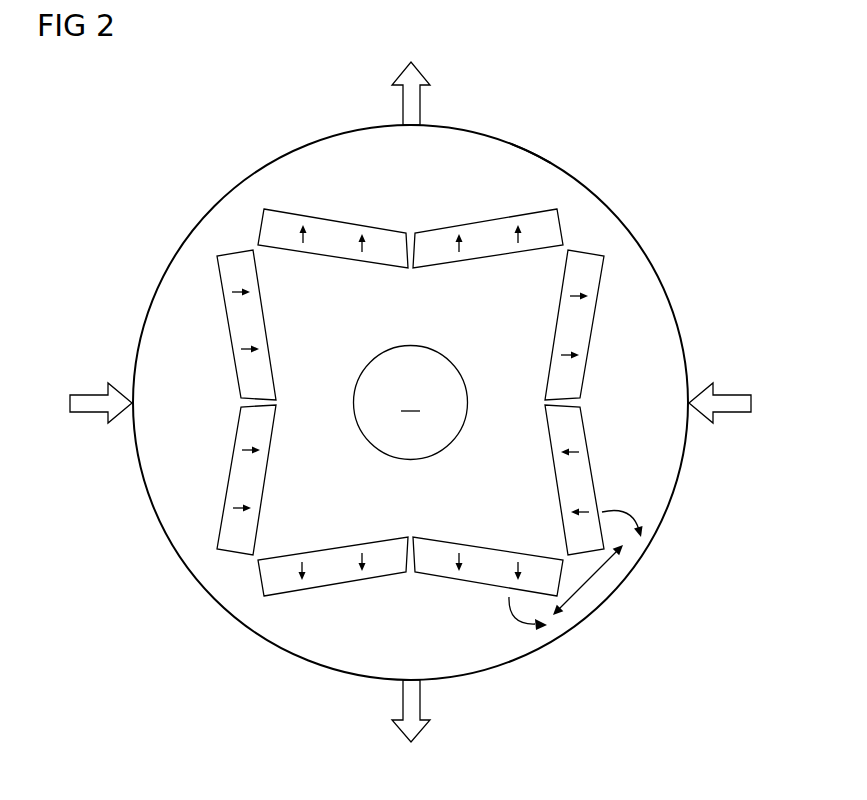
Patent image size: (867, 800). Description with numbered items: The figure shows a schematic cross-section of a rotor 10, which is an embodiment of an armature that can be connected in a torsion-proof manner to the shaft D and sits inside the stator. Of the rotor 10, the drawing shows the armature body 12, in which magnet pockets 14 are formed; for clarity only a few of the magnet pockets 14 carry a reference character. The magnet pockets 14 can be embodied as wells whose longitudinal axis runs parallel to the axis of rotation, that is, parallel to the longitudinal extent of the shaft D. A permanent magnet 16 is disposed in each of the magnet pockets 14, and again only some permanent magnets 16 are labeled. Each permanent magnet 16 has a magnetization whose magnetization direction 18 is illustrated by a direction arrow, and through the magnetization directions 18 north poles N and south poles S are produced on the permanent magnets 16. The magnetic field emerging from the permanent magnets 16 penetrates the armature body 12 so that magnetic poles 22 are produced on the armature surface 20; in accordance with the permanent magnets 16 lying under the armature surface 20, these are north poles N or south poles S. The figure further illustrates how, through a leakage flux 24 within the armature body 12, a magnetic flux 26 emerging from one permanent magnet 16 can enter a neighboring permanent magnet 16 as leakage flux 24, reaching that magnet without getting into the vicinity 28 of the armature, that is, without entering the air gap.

The rotor 10 is at (604, 200).
The armature body 12 is at (640, 263).
The magnet pockets 14 is at (322, 218).
The permanent magnet 16 is at (319, 246).
The magnetization direction 18 is at (303, 245).
The armature surface 20 is at (530, 148).
The magnetic poles 22 is at (421, 97).
The leakage flux 24 is at (588, 582).
The magnetic flux 26 is at (509, 598).
The vicinity of the armature 28 is at (702, 523).